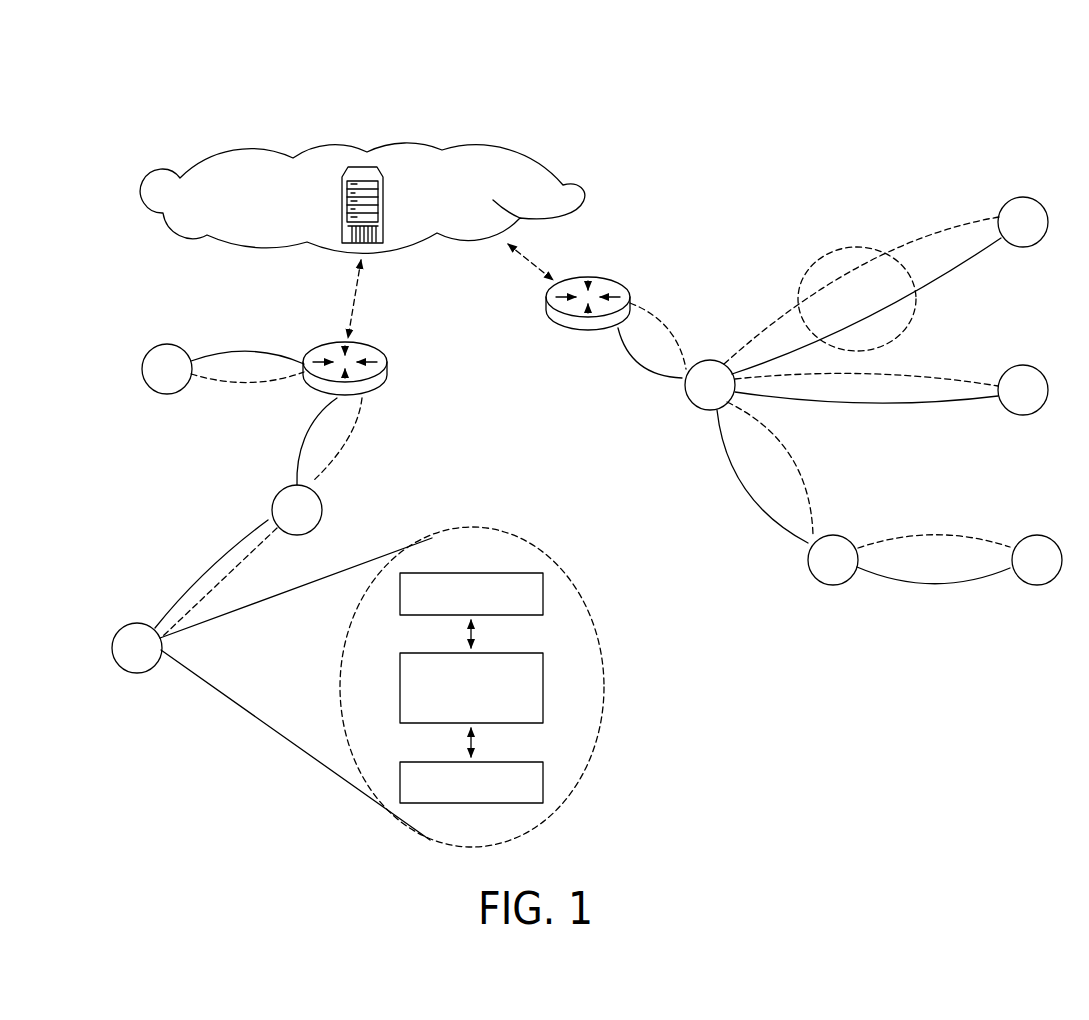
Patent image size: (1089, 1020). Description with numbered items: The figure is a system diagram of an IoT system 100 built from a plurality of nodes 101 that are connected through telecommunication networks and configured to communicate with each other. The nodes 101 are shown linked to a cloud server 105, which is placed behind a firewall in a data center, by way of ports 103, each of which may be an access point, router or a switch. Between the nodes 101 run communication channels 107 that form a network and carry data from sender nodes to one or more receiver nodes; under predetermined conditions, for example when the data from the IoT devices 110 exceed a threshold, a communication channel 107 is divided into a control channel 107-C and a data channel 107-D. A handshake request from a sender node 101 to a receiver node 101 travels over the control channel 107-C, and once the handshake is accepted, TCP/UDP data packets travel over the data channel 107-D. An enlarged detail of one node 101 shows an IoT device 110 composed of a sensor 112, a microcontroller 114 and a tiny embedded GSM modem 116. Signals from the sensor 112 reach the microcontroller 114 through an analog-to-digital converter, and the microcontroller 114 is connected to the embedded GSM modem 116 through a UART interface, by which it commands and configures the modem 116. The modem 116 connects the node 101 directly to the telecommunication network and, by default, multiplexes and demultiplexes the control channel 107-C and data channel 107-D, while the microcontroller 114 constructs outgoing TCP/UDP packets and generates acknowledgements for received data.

The IoT system 100 is at (996, 56).
The node 101 is at (146, 360).
The port 103 is at (390, 372).
The cloud server 105 is at (570, 180).
The communication channel 107 is at (800, 281).
The control channel 107-C is at (240, 386).
The data channel 107-D is at (242, 346).
The IoT device 110 is at (483, 529).
The sensor 112 is at (545, 594).
The microcontroller 114 is at (545, 690).
The embedded GSM modem 116 is at (545, 783).